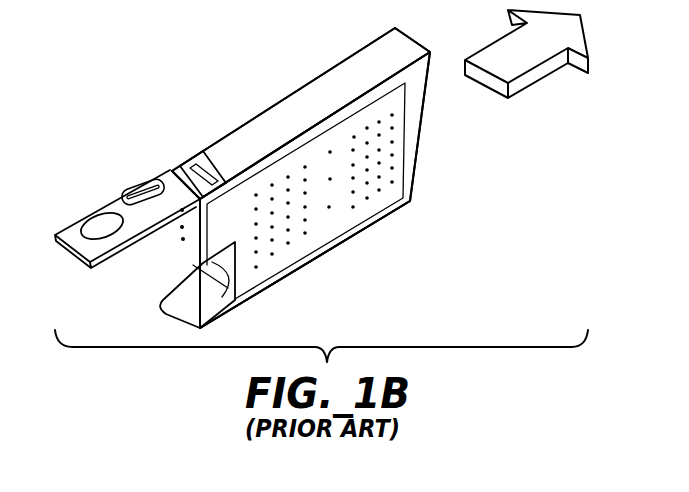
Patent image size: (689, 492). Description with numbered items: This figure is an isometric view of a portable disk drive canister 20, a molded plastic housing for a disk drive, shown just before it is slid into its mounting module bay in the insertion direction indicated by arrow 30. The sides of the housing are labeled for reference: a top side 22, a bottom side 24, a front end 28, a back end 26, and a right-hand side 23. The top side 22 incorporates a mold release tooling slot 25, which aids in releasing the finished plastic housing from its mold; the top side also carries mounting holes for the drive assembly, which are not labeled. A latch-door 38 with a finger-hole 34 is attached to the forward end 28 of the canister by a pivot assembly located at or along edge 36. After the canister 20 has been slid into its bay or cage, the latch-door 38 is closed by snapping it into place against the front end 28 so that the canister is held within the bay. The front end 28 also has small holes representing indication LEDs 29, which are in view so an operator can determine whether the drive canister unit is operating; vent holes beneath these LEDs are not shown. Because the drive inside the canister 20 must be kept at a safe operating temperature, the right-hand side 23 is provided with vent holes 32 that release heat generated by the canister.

The portable disk drive canister 20 is at (306, 87).
The top side 22 is at (335, 88).
The right-hand side 23 is at (266, 268).
The bottom side 24 is at (316, 260).
The mold release tooling slot 25 is at (193, 165).
The back end 26 is at (413, 163).
The front end 28 is at (173, 235).
The indication LEDs 29 is at (185, 241).
The insertion direction 30 is at (538, 72).
The vent holes 32 is at (330, 152).
The finger-hole 34 is at (98, 225).
The edge 36 is at (180, 172).
The latch-door 38 is at (113, 199).